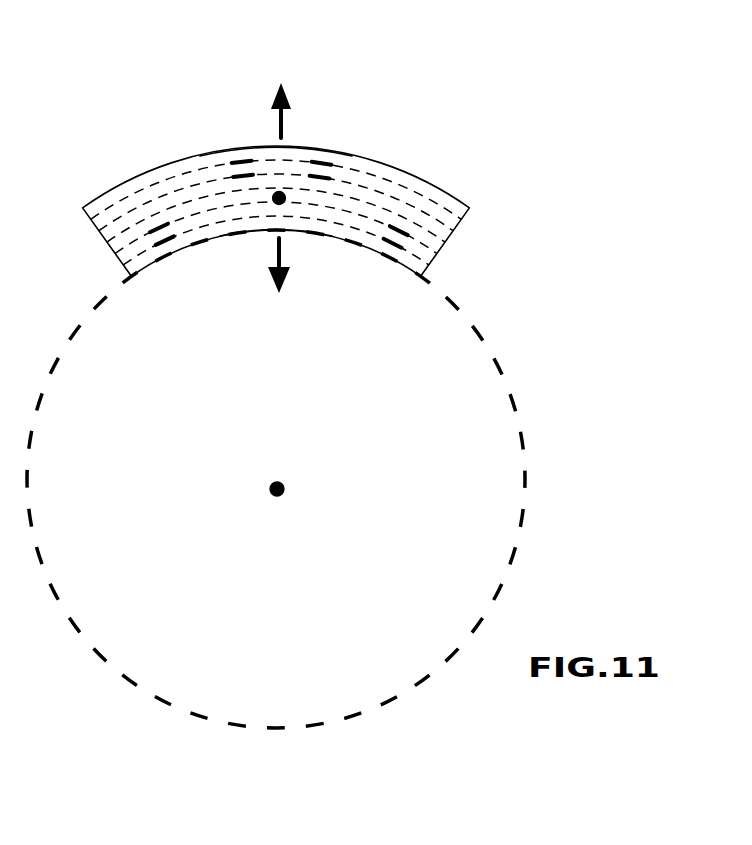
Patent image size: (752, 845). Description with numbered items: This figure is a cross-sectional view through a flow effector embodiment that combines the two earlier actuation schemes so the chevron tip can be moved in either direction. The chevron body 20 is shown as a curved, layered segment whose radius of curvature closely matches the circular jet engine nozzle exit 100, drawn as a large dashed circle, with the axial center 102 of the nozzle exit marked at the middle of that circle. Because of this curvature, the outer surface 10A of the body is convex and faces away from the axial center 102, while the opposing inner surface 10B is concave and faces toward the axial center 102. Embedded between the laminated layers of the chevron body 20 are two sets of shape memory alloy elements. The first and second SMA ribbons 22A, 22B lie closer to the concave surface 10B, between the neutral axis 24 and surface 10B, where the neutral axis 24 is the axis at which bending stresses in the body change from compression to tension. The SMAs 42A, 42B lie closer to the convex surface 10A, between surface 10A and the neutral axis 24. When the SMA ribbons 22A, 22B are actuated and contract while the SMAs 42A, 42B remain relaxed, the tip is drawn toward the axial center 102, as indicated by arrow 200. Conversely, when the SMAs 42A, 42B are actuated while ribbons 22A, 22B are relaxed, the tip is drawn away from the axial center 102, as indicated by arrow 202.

The jet engine nozzle exit 100 is at (505, 372).
The axial center 102 is at (285, 484).
The chevron body 20 is at (455, 238).
The convex surface 10A is at (305, 148).
The concave surface 10B is at (298, 231).
The SMA 42A is at (236, 157).
The SMA 42B is at (243, 177).
The first SMA ribbon 22A is at (163, 227).
The second SMA ribbon 22B is at (169, 241).
The neutral axis 24 is at (276, 190).
The arrow 202 is at (289, 97).
The arrow 200 is at (280, 293).